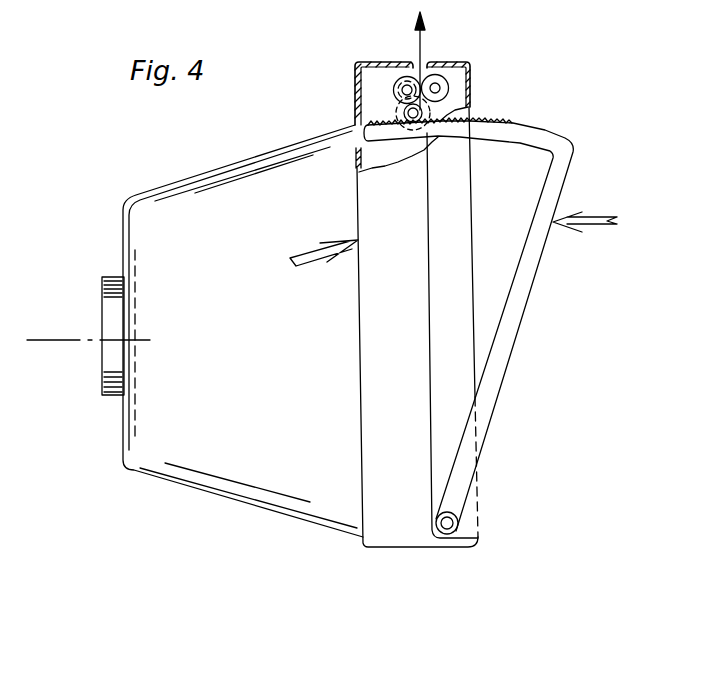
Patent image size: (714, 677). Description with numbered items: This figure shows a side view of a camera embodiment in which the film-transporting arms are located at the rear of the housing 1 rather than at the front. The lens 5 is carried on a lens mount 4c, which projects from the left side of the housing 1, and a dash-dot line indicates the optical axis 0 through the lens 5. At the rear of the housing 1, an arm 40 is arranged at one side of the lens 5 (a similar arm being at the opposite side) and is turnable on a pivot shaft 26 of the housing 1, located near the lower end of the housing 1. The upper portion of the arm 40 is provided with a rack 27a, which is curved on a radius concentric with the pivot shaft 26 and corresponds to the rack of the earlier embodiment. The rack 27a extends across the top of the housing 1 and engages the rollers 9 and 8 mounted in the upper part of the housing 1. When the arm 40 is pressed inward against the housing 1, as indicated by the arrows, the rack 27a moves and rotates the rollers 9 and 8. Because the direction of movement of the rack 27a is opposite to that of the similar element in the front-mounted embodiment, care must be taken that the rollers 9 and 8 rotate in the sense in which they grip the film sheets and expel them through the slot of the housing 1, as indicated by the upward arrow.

The housing 1 is at (395, 537).
The lens mount 4c is at (162, 455).
The lens 5 is at (115, 317).
The axis 0 is at (62, 340).
The roller 8 is at (442, 78).
The roller 9 is at (401, 80).
The pivot shaft 26 is at (458, 521).
The rack 27a is at (485, 125).
The arm 40 is at (510, 315).